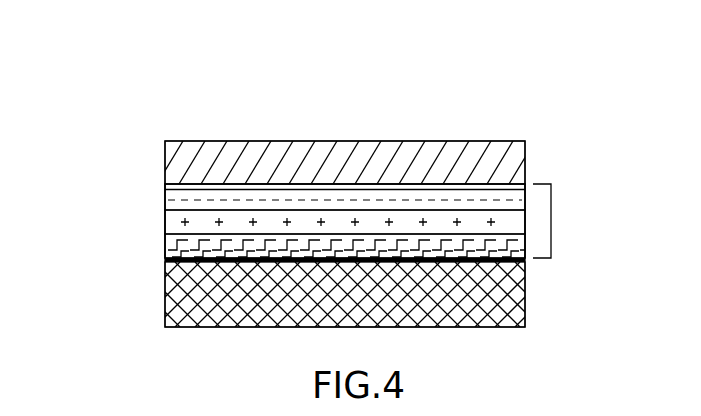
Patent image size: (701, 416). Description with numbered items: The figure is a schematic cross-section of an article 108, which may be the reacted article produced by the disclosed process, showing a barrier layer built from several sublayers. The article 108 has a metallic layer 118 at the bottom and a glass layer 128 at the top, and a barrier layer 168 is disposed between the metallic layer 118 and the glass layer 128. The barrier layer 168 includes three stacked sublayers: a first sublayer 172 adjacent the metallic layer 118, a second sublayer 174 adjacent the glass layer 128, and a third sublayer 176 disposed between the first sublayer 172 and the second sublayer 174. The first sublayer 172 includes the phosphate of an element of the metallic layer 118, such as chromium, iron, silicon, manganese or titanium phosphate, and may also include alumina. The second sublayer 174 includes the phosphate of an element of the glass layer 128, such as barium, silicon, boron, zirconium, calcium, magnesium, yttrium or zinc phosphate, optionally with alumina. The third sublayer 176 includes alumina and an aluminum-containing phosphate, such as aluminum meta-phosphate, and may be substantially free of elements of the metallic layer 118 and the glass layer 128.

The article 108 is at (128, 72).
The glass layer 128 is at (526, 163).
The barrier layer 168 is at (551, 222).
The second sublayer 174 is at (161, 196).
The third sublayer 176 is at (162, 224).
The first sublayer 172 is at (161, 247).
The metallic layer 118 is at (527, 293).